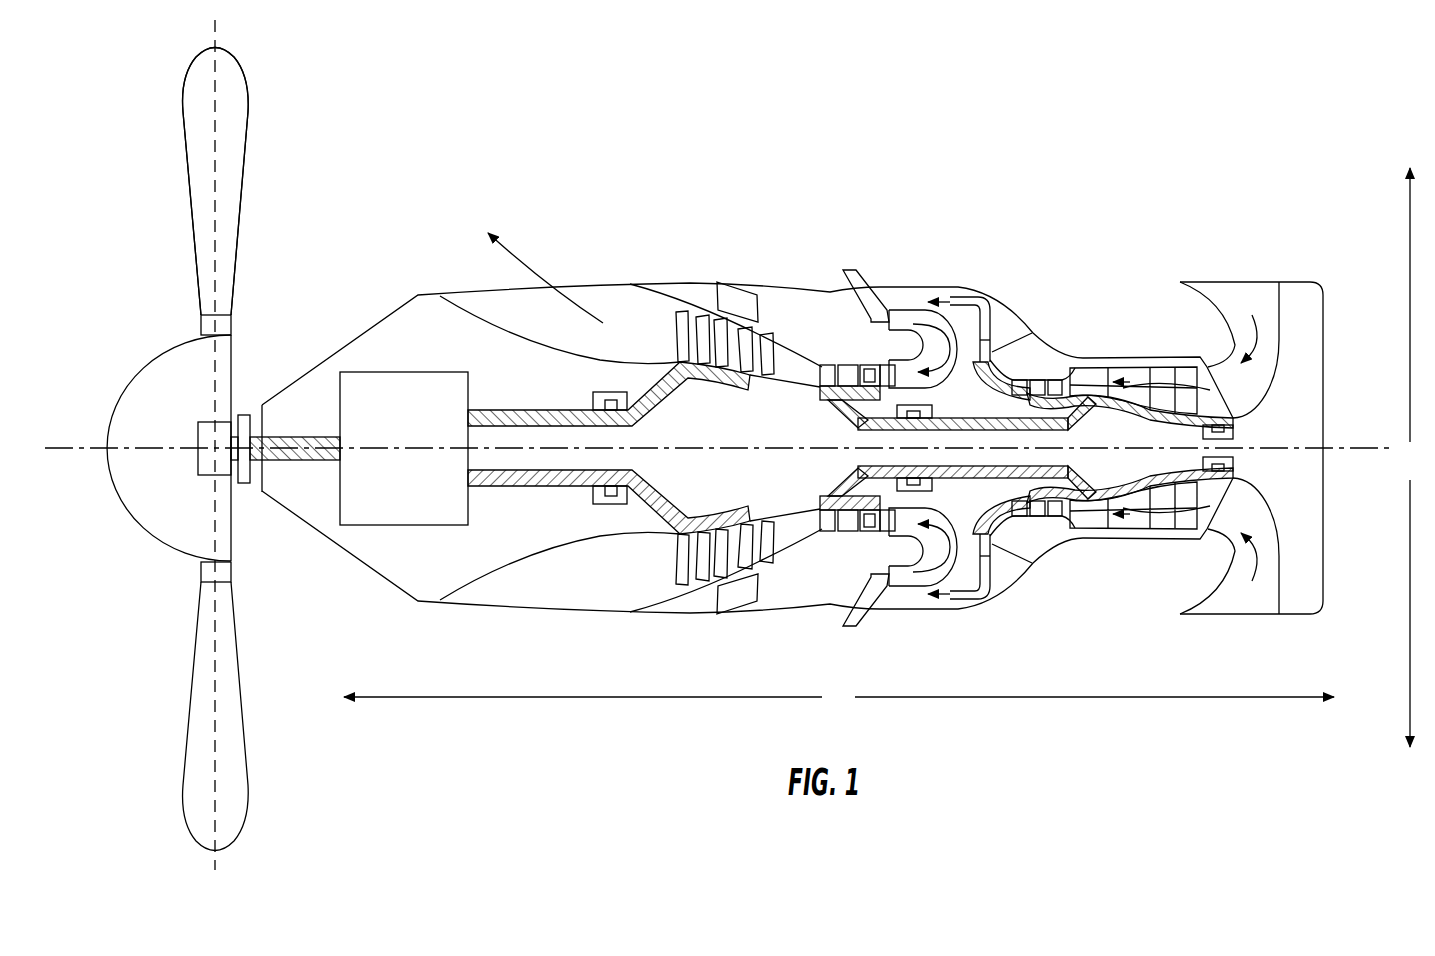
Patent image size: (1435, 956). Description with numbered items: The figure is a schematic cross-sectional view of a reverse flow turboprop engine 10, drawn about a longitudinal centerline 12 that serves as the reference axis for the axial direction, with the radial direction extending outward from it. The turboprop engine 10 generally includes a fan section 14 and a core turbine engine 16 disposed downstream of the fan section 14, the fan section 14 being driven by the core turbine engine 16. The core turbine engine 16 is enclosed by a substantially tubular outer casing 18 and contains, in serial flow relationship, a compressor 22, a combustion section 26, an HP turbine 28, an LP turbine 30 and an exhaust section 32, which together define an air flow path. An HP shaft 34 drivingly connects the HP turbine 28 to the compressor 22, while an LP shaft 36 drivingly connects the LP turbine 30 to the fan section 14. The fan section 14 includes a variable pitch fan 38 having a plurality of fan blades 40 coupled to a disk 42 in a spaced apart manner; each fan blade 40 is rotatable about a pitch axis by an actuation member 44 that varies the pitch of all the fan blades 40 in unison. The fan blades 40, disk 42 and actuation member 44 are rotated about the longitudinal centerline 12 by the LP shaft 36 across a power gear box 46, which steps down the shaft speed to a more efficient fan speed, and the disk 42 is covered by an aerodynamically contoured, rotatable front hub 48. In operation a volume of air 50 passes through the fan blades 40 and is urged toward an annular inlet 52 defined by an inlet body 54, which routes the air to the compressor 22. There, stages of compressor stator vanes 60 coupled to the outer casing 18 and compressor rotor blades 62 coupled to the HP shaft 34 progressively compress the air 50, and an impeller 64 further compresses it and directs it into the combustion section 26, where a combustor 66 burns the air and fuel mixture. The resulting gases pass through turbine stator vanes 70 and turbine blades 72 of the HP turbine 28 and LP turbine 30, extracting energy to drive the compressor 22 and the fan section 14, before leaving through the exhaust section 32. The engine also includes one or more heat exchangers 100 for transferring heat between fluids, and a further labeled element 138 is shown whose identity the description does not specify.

The reverse flow turboprop engine 10 is at (428, 251).
The longitudinal centerline 12 is at (1340, 451).
The fan section 14 is at (250, 194).
The core turbine engine 16 is at (697, 233).
The outer casing 18 is at (903, 285).
The compressor 22 is at (1145, 545).
The combustion section 26 is at (905, 602).
The HP turbine 28 is at (846, 538).
The LP turbine 30 is at (706, 590).
The exhaust section 32 is at (598, 586).
The HP shaft 34 is at (1072, 380).
The LP shaft 36 is at (650, 378).
The variable pitch fan 38 is at (160, 551).
The fan blades 40 is at (182, 135).
The disk 42 is at (232, 324).
The actuation member 44 is at (196, 427).
The power gear box 46 is at (397, 372).
The front hub 48 is at (133, 521).
The volume of air 50 is at (1260, 340).
The annular inlet 52 is at (1233, 281).
The inlet body 54 is at (1288, 281).
The compressor stator vanes 60 is at (1163, 521).
The compressor rotor blades 62 is at (1143, 522).
The impeller 64 is at (1005, 523).
The combustor 66 is at (905, 311).
The turbine stator vanes 70 is at (704, 322).
The turbine blades 72 is at (678, 322).
The heat exchanger 100 is at (746, 290).
The fuel line 138 is at (943, 360).